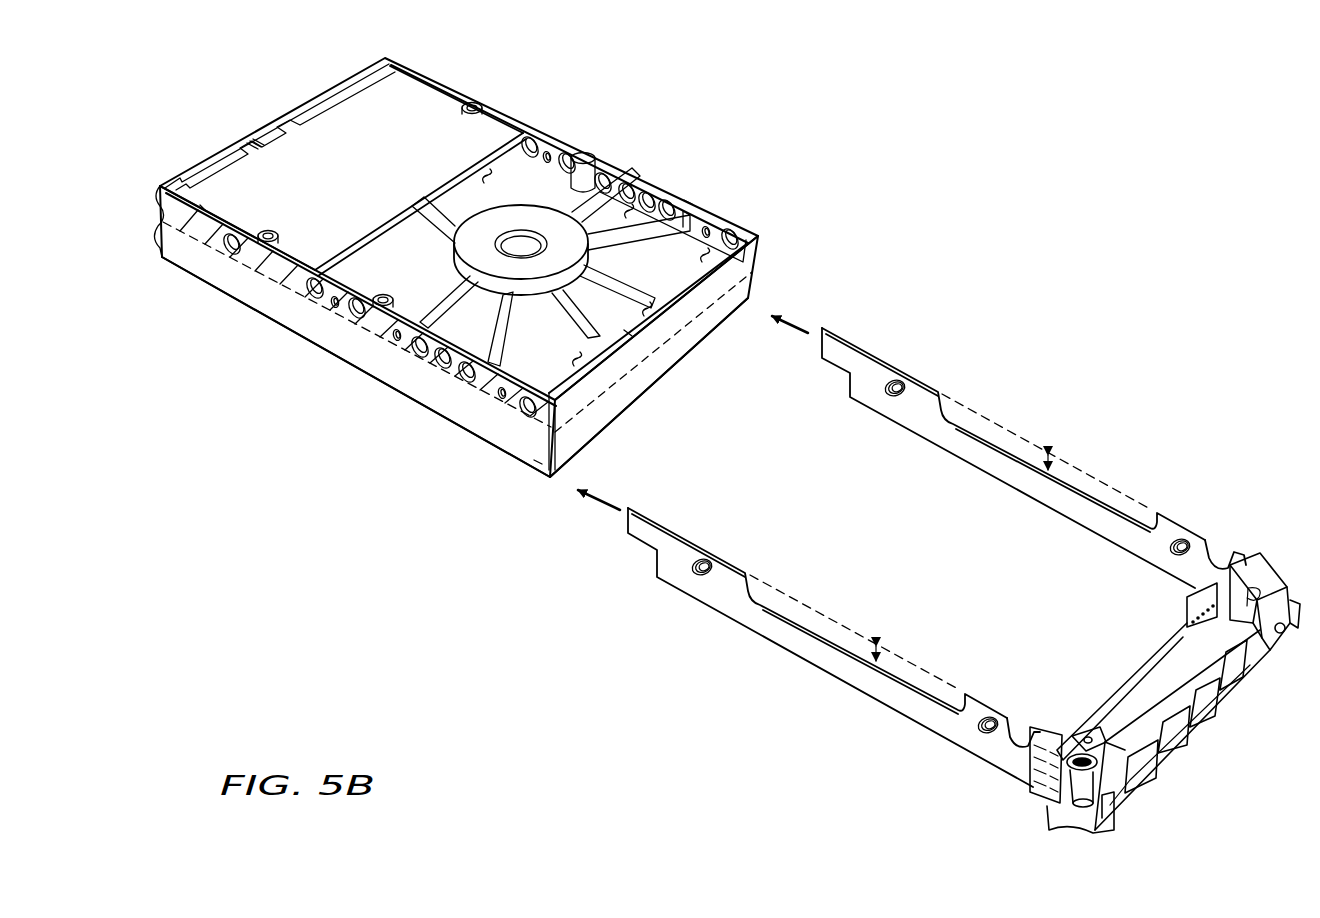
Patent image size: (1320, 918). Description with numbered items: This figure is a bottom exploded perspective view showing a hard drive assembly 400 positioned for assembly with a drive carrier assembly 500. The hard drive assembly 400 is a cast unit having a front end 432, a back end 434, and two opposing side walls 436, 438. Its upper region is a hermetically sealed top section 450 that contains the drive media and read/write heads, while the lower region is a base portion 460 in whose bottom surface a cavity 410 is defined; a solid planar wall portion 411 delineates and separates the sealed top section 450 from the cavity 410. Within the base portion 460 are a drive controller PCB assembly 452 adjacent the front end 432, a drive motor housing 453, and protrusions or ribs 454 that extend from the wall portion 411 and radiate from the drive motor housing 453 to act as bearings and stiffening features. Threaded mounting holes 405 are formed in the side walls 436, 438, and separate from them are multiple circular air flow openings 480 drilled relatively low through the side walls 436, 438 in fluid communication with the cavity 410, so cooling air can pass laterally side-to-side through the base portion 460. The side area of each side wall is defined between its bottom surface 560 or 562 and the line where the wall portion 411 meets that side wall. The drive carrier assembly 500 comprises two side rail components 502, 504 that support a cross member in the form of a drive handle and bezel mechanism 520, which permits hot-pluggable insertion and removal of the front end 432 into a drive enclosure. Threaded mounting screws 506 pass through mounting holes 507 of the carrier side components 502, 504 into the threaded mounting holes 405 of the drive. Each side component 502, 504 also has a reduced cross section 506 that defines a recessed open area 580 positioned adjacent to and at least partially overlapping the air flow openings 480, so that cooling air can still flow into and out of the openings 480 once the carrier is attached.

The hard drive assembly 400 is at (185, 97).
The threaded mounting holes 405 is at (548, 152).
The cavity 410 is at (552, 472).
The solid planar wall portion 411 is at (740, 268).
The front end 432 is at (308, 107).
The back end 434 is at (680, 320).
The side wall 436 is at (594, 158).
The side wall 438 is at (498, 398).
The top section 450 is at (150, 226).
The drive controller PCB assembly 452 is at (248, 218).
The drive motor housing 453 is at (488, 226).
The protrusions/ribs 454 is at (640, 255).
The base portion 460 is at (150, 190).
The air flow openings 480 is at (528, 138).
The drive carrier assembly 500 is at (1236, 420).
The drive carrier side component 502 is at (1010, 760).
The drive carrier side component 504 is at (1190, 530).
The threaded mounting screws / reduced cross section 506 is at (383, 296).
The mounting holes 507 is at (897, 383).
The drive handle and bezel mechanism 520 is at (1127, 758).
The bottom surface of side wall 560 is at (605, 212).
The bottom surface of side wall 562 is at (688, 198).
The recessed open area 580 is at (1053, 464).